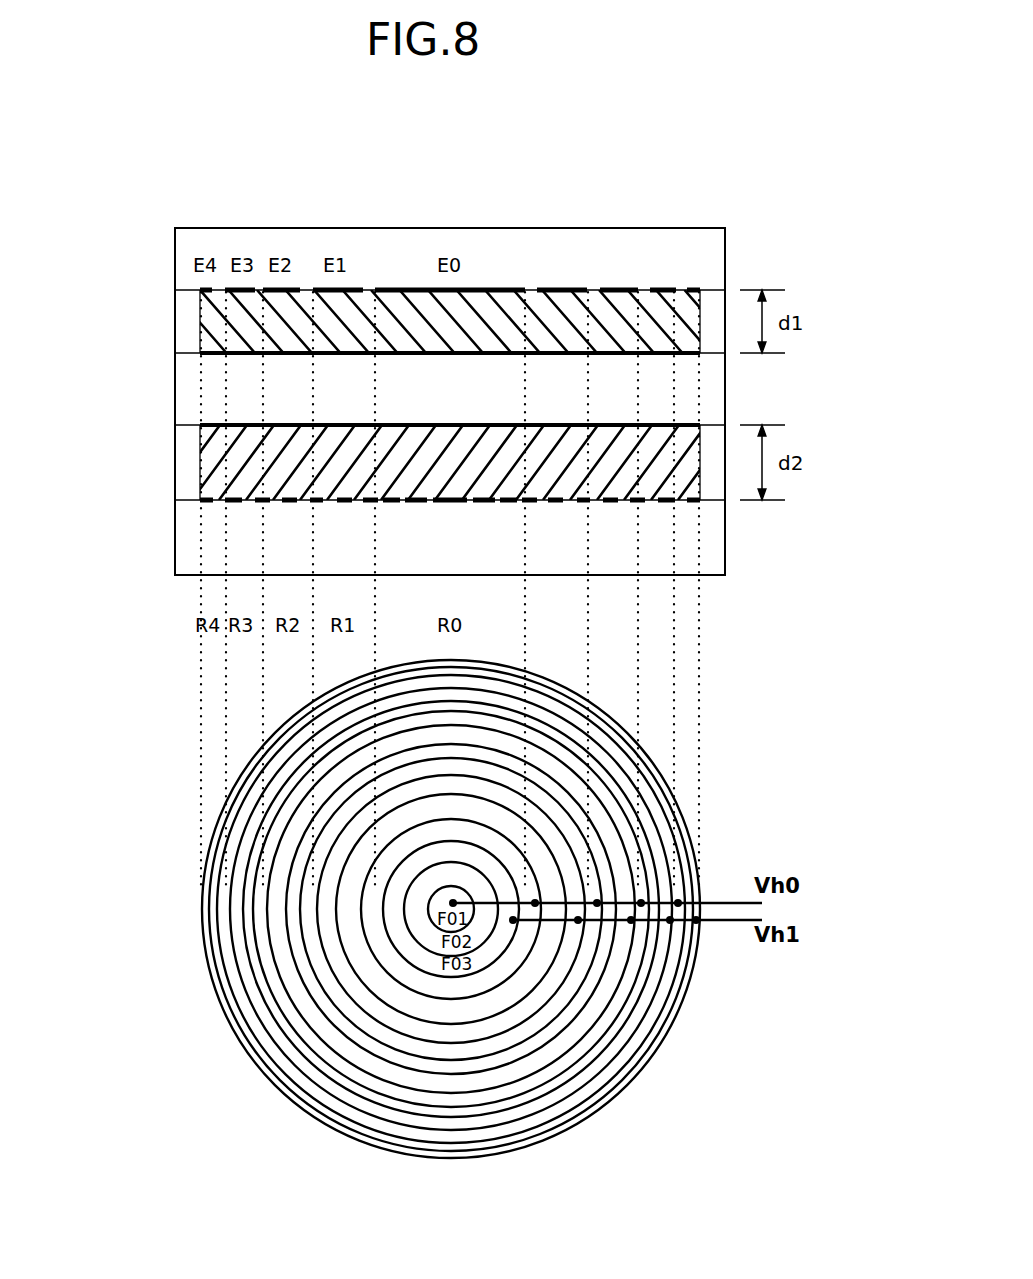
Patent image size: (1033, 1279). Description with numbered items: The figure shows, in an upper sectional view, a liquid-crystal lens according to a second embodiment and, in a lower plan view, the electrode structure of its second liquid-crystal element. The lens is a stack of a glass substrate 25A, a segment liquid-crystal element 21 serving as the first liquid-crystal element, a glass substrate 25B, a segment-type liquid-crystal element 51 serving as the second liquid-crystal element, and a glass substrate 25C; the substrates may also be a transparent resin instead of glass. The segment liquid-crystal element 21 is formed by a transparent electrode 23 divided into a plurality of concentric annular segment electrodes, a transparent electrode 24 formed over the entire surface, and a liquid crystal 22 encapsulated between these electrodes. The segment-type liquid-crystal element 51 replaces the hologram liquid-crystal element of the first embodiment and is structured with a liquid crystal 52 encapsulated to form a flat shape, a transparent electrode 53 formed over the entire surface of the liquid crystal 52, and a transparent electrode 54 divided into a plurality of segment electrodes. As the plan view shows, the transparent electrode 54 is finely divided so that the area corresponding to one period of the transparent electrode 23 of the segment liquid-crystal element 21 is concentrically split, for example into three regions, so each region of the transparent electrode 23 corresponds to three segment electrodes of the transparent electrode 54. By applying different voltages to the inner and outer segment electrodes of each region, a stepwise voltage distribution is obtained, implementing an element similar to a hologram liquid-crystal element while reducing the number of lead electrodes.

The segment liquid-crystal element 21 is at (392, 346).
The liquid crystal 22 is at (470, 330).
The transparent electrode 23 is at (568, 290).
The transparent electrode 24 is at (618, 355).
The glass substrate 25A is at (700, 255).
The glass substrate 25B is at (700, 390).
The glass substrate 25C is at (700, 540).
The segment-type liquid-crystal element 51 is at (389, 441).
The liquid crystal 52 is at (410, 440).
The transparent electrode 53 is at (568, 425).
The transparent electrode 54 is at (505, 506).